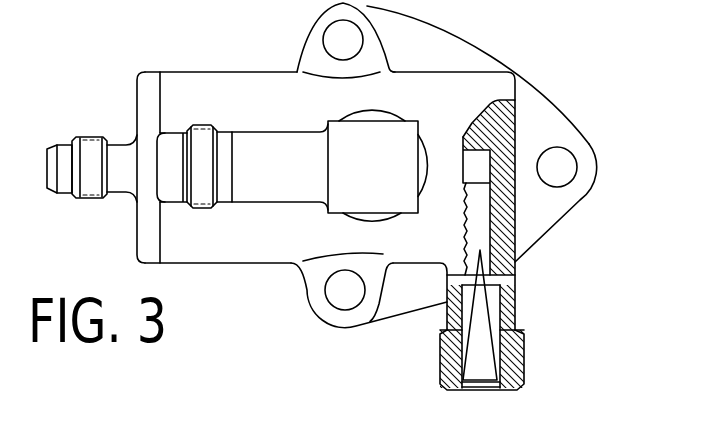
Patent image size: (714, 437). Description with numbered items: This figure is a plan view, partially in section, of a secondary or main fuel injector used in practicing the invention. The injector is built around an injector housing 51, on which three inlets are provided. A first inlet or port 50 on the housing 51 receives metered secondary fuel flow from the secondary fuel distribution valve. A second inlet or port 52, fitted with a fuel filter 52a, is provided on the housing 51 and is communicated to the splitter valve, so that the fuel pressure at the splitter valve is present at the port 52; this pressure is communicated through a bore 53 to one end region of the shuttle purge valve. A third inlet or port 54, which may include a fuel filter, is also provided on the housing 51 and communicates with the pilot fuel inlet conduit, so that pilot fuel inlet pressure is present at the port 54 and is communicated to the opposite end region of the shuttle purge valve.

The first inlet or port 50 is at (252, 145).
The injector housing 51 is at (535, 110).
The second inlet or port 52 is at (505, 304).
The fuel filter 52a is at (495, 326).
The bore 53 is at (477, 162).
The third inlet or port 54 is at (92, 138).